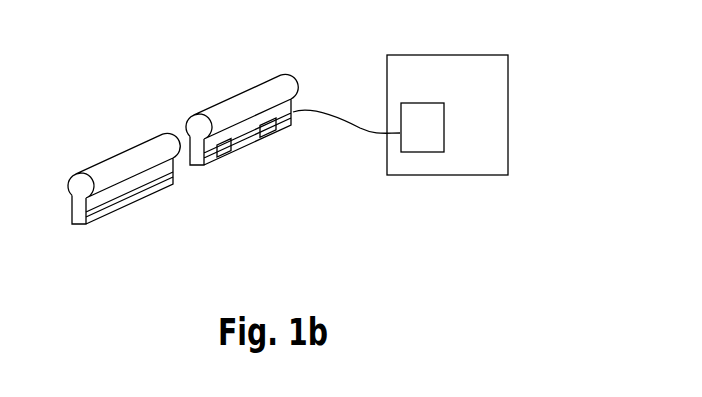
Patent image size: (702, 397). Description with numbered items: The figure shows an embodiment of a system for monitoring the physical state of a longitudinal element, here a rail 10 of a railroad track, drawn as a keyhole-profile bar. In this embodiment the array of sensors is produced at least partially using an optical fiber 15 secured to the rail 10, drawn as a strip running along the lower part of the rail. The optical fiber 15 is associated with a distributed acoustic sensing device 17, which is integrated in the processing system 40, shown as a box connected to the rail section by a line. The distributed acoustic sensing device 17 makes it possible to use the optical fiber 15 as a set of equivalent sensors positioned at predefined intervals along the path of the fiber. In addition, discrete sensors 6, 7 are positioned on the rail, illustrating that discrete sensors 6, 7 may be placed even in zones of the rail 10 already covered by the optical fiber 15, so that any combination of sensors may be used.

The rail 10 is at (124, 163).
The optical fiber 15 is at (125, 205).
The discrete sensor 6 is at (227, 157).
The discrete sensor 7 is at (272, 137).
The distributed acoustic sensing device 17 is at (437, 141).
The processing system 40 is at (508, 118).